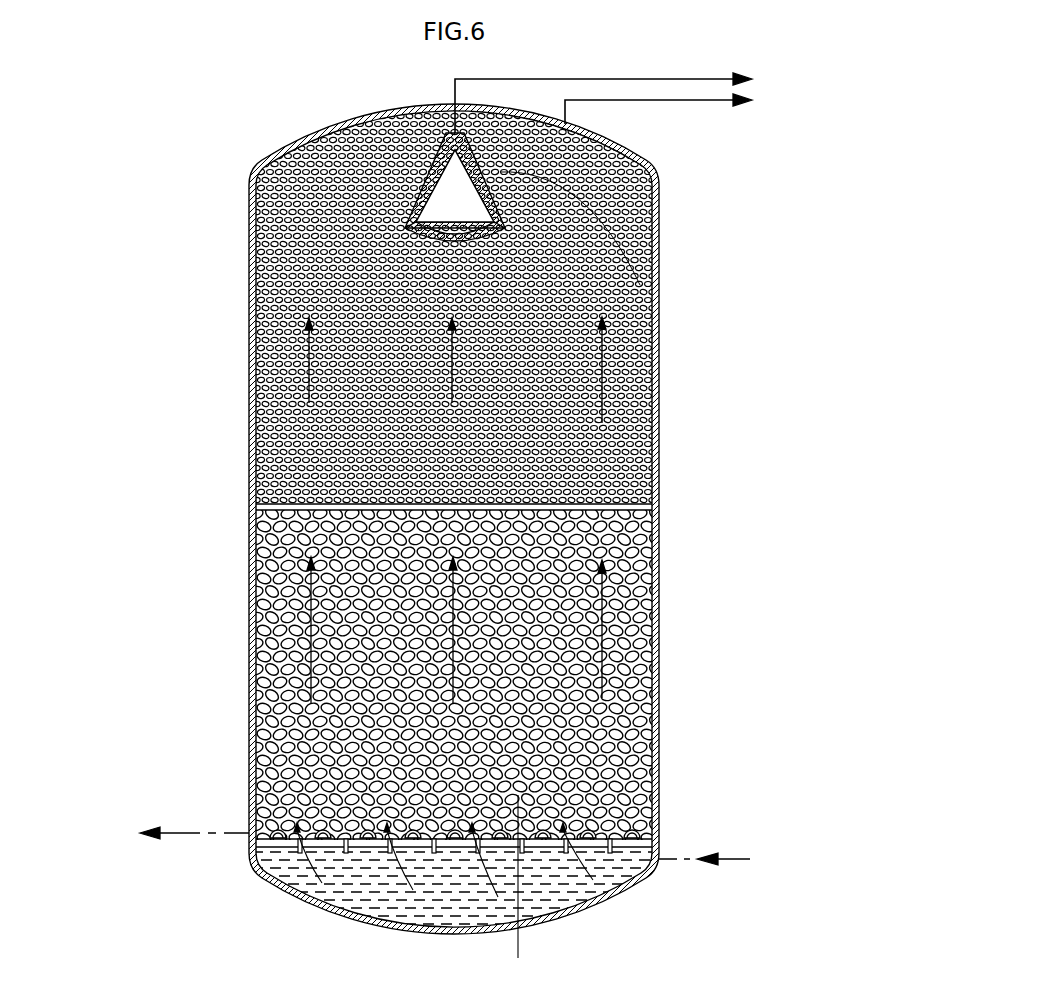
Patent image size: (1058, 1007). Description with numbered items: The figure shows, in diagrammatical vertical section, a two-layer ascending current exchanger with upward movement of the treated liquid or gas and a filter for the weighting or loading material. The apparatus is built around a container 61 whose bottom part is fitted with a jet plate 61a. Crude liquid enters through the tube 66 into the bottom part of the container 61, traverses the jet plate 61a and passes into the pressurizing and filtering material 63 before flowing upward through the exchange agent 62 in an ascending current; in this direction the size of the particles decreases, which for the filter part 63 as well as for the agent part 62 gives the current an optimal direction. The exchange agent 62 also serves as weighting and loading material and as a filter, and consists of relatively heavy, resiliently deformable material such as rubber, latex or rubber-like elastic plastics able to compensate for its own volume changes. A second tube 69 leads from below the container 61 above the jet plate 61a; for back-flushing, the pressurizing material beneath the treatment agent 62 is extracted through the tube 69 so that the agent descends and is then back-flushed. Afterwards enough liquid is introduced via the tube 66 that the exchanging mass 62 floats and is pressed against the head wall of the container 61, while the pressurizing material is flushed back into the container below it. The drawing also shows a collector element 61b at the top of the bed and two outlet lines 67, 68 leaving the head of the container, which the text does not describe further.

The container 61 is at (658, 700).
The jet plate 61a is at (655, 822).
The triangular collector 61b is at (447, 175).
The exchange agent 62 is at (640, 388).
The pressurizing and filtering material 63 is at (625, 625).
The tube 66 is at (736, 858).
The outlet line 67 is at (711, 102).
The outlet line from collector 68 is at (684, 78).
The tube 69 is at (200, 832).